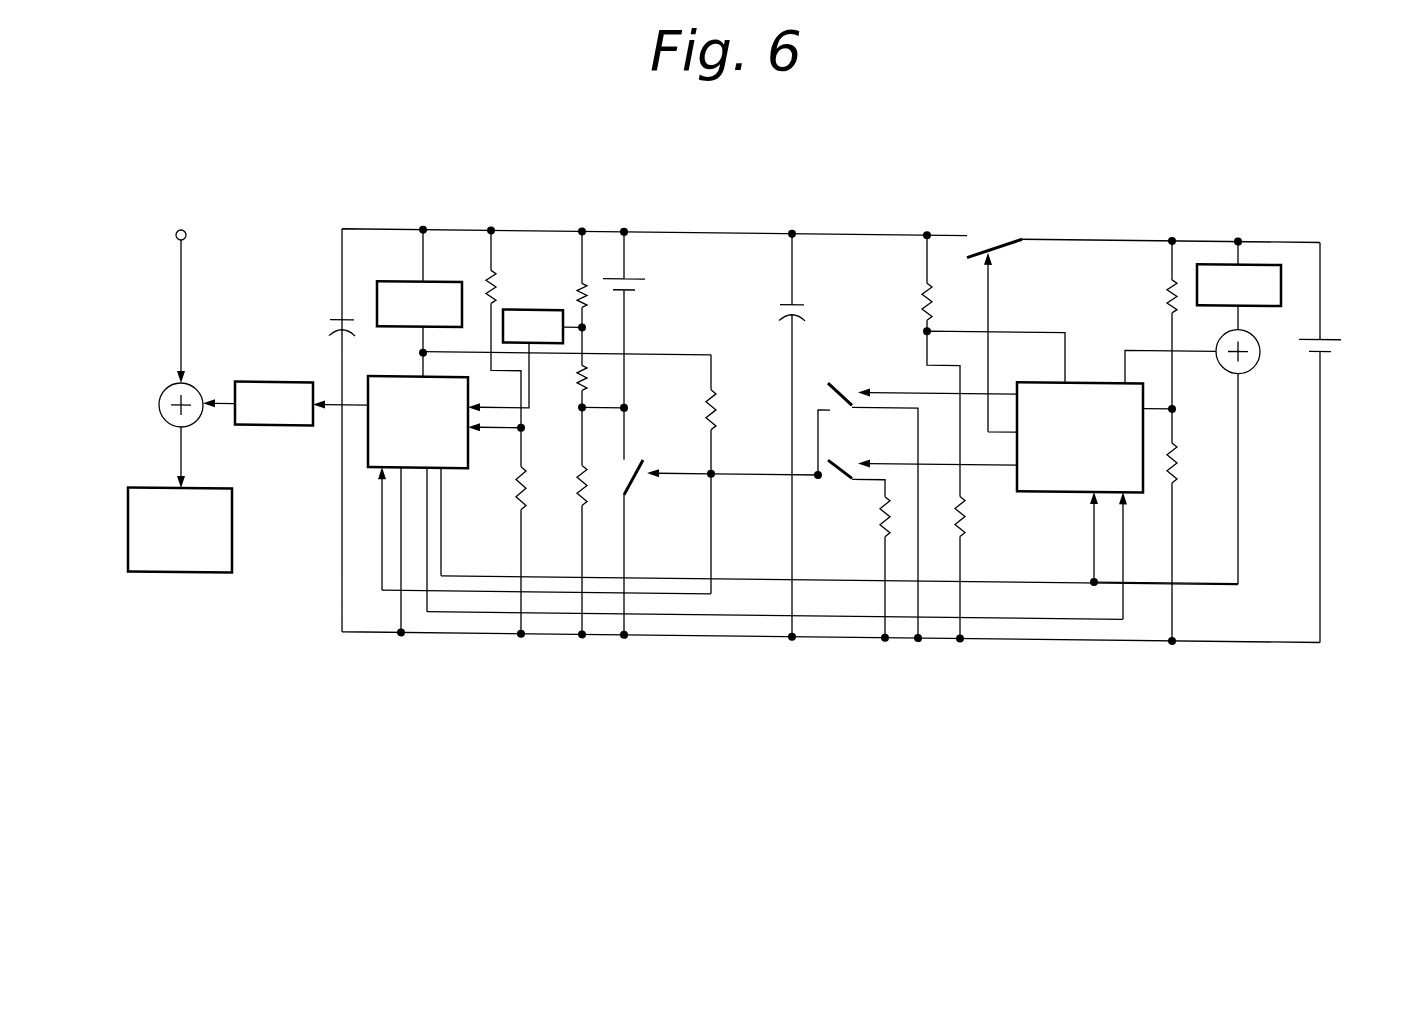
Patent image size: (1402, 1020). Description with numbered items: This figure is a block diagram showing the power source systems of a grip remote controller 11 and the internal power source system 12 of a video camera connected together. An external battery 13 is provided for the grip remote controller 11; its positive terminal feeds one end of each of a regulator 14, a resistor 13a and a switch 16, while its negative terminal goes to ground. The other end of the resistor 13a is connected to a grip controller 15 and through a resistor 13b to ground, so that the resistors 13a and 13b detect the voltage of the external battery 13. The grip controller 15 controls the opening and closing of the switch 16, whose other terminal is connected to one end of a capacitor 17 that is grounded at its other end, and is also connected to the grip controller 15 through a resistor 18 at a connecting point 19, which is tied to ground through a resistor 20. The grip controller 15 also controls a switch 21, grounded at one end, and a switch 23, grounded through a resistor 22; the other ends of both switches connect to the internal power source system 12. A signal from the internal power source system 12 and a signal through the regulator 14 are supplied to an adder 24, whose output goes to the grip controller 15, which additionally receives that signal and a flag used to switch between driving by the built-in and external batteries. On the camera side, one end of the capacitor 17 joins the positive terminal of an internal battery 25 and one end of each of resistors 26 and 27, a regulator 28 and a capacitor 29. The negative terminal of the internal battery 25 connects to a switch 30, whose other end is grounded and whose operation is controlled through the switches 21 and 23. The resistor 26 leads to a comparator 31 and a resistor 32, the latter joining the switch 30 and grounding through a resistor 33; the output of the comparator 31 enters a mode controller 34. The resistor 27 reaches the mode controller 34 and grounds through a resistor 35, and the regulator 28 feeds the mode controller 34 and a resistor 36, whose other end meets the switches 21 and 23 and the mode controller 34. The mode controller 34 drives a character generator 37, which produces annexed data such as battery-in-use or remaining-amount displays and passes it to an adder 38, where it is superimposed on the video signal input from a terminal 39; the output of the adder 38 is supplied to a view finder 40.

The grip remote controller 11 is at (1005, 648).
The internal power source system 12 is at (460, 650).
The external battery 13 is at (1306, 340).
The resistor 13a is at (1162, 285).
The resistor 13b is at (1180, 448).
The regulator 14 is at (1255, 251).
The grip controller 15 is at (1100, 370).
The switch 16 is at (987, 236).
The capacitor 17 is at (800, 292).
The resistor 18 is at (920, 280).
The connecting point 19 is at (922, 330).
The resistor 20 is at (968, 505).
The switch 21 is at (840, 372).
The resistor 22 is at (878, 512).
The switch 23 is at (836, 476).
The adder 24 is at (1241, 362).
The internal battery 25 is at (650, 272).
The resistor 26 is at (578, 278).
The resistor 27 is at (484, 268).
The regulator 28 is at (392, 278).
The capacitor 29 is at (336, 305).
The switch 30 is at (636, 456).
The comparator 31 is at (530, 302).
The resistor 32 is at (575, 375).
The resistor 33 is at (574, 482).
The mode controller 34 is at (383, 373).
The resistor 35 is at (515, 478).
The resistor 36 is at (722, 392).
The character generator 37 is at (276, 425).
The adder 38 is at (198, 385).
The terminal 39 is at (181, 228).
The view finder 40 is at (233, 537).